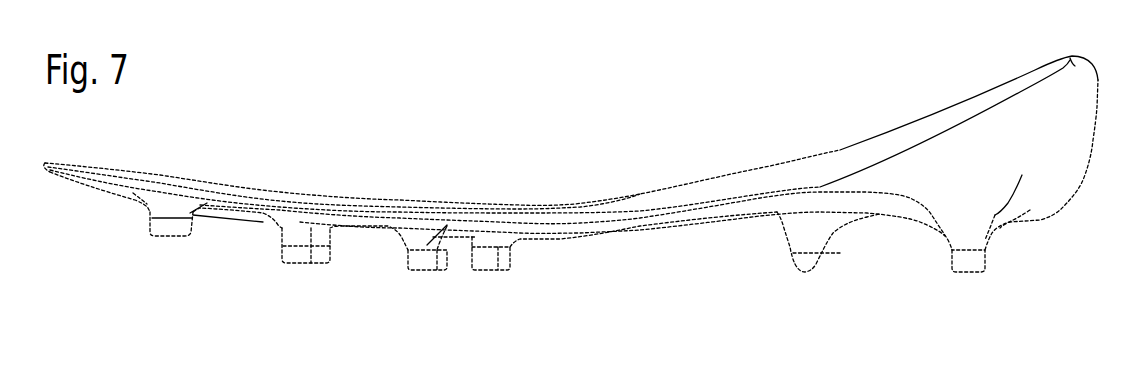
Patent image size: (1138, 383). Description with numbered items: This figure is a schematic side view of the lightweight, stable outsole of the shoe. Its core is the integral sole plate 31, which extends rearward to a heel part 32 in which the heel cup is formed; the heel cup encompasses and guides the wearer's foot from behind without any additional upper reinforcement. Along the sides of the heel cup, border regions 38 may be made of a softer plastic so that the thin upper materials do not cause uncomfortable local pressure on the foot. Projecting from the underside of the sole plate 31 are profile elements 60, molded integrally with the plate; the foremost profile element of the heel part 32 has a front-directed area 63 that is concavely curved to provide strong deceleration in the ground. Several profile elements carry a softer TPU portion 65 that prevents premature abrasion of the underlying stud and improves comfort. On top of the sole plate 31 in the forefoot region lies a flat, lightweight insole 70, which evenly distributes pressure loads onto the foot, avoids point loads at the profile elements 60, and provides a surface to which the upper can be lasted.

The sole plate 31 is at (593, 181).
The heel part 32 is at (1012, 151).
The border regions 38 is at (910, 136).
The profile elements 60 is at (277, 227).
The area 63 is at (798, 235).
The portion 65 is at (168, 232).
The insole 70 is at (263, 193).